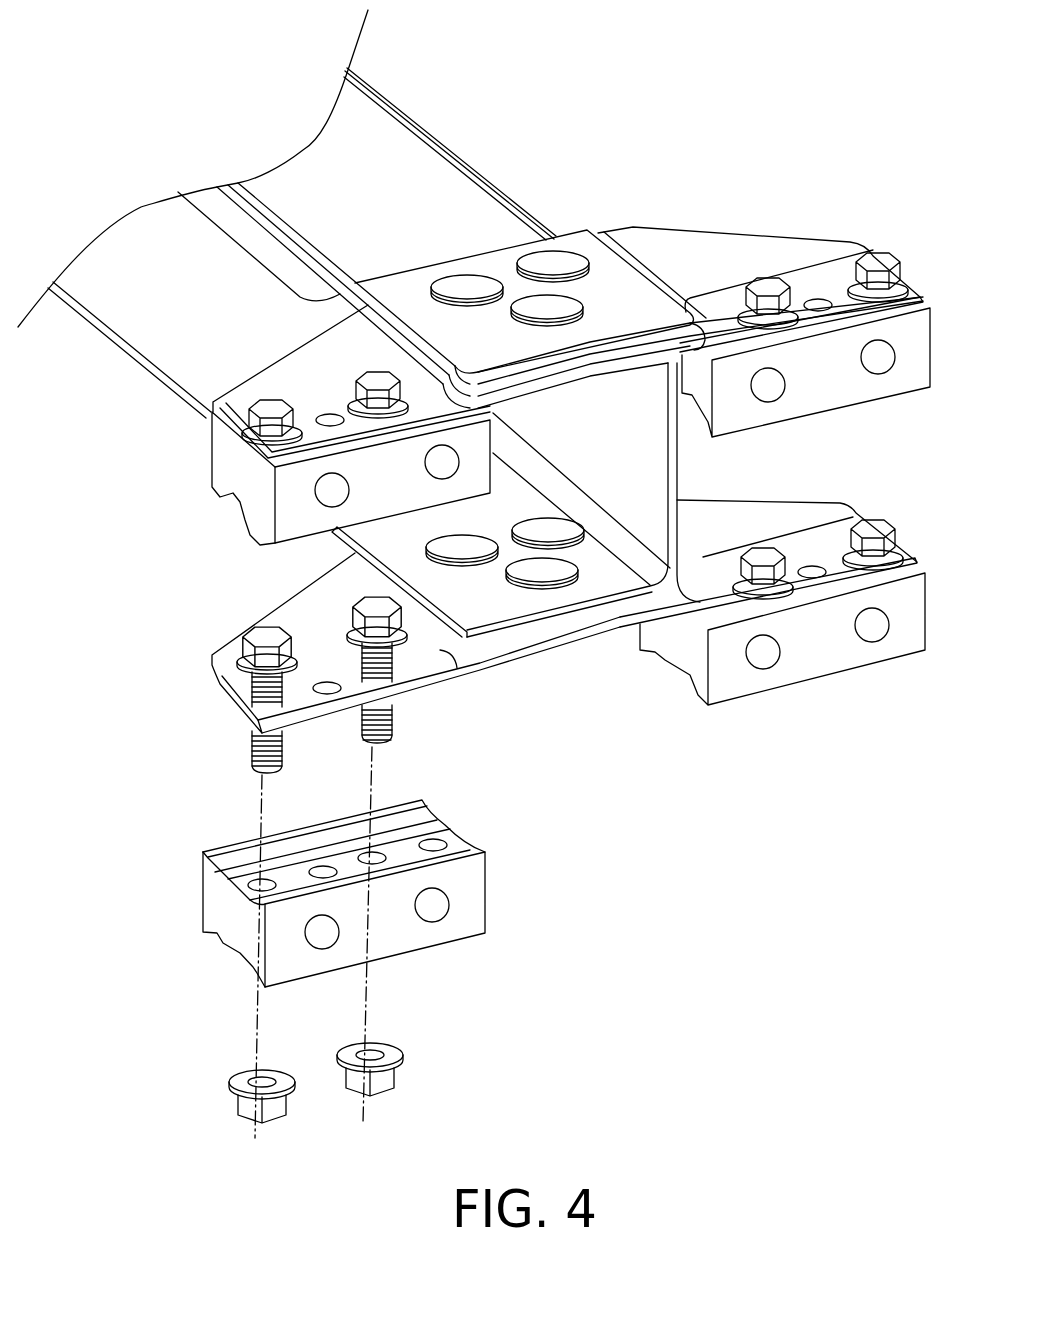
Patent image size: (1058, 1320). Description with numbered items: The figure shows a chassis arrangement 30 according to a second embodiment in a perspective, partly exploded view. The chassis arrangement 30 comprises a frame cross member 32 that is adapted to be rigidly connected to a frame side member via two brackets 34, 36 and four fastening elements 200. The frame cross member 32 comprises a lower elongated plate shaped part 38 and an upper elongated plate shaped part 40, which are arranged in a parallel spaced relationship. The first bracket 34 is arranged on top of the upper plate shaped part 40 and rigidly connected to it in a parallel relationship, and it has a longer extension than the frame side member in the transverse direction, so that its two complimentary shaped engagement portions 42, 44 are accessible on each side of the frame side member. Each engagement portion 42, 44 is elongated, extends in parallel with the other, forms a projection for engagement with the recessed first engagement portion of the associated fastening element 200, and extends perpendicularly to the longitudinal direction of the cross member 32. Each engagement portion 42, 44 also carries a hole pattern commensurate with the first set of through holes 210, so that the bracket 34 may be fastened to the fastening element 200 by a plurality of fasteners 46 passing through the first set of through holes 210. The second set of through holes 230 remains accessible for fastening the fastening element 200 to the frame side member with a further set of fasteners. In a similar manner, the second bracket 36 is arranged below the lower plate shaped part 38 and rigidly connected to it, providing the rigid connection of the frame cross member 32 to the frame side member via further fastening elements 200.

The chassis arrangement 30 is at (612, 136).
The frame cross member 32 is at (412, 208).
The first bracket 34 is at (702, 277).
The second bracket 36 is at (752, 533).
The lower elongated plate shaped part 38 is at (503, 600).
The upper elongated plate shaped part 40 is at (458, 243).
The complimentary shaped engagement portion 42 is at (310, 418).
The complimentary shaped engagement portion 44 is at (837, 292).
The fasteners 46 is at (267, 408).
The fastening element 200 is at (213, 518).
The first set of through holes 210 is at (260, 453).
The second set of through holes 230 is at (330, 490).